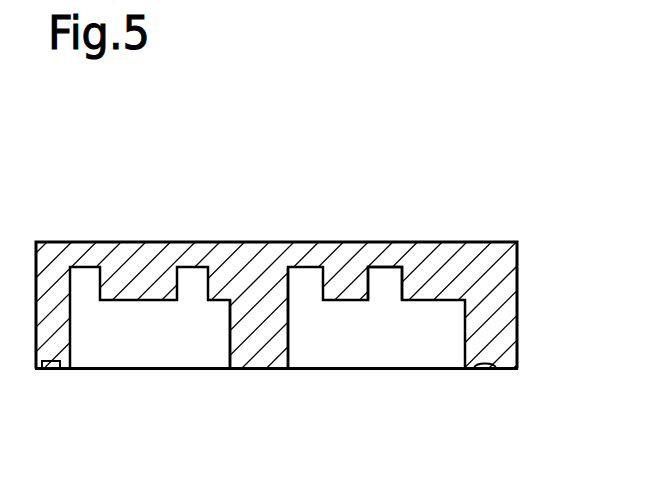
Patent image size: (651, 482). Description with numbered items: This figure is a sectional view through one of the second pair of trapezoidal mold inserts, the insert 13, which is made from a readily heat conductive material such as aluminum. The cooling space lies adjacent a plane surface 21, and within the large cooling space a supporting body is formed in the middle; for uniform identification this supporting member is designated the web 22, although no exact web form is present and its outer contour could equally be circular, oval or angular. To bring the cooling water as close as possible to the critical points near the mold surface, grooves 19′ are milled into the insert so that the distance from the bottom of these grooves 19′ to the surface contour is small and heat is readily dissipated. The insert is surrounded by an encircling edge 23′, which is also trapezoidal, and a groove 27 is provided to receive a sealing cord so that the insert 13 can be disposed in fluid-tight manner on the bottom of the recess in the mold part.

The insert 13 is at (456, 275).
The grooves 19′ is at (382, 265).
The plane surface 21 is at (363, 370).
The web 22 is at (262, 370).
The groove 27 is at (483, 370).
The encircling edge 23′ is at (515, 370).